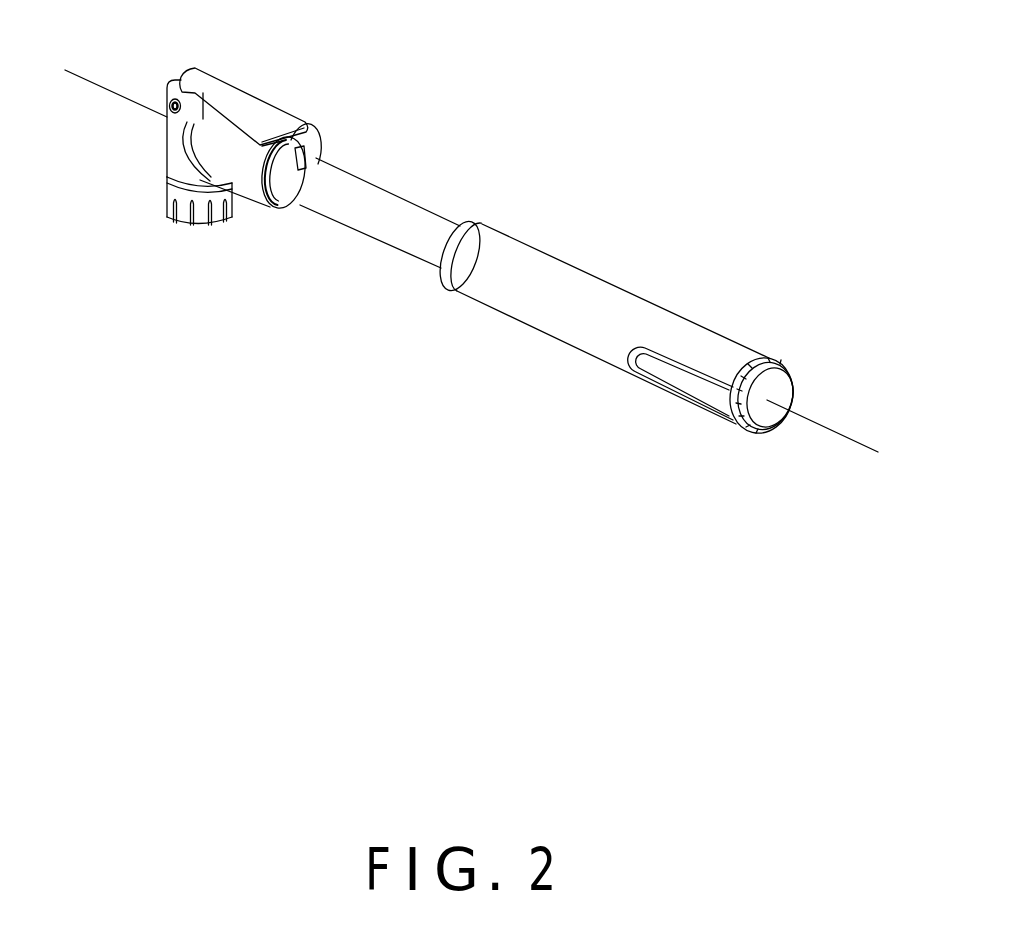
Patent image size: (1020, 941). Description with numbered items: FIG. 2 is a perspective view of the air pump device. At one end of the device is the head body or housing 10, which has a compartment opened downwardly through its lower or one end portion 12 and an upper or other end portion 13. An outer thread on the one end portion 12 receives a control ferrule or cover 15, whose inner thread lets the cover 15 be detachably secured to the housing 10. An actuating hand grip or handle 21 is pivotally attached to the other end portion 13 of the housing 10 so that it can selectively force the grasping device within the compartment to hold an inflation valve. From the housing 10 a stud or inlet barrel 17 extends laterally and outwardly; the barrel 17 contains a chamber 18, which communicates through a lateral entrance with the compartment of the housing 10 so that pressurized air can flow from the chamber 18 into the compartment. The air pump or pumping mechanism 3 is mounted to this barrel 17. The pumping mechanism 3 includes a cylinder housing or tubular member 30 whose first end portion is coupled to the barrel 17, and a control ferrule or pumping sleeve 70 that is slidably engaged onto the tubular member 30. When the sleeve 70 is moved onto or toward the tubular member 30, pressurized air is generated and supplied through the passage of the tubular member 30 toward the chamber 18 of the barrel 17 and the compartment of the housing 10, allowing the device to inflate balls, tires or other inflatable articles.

The pumping mechanism 3 is at (125, 100).
The housing 10 is at (172, 142).
The one end portion 12 is at (173, 167).
The other end portion 13 is at (170, 92).
The cover 15 is at (185, 228).
The barrel 17 is at (275, 210).
The chamber 18 is at (318, 160).
The handle 21 is at (240, 108).
The tubular member 30 is at (393, 247).
The sleeve 70 is at (640, 308).